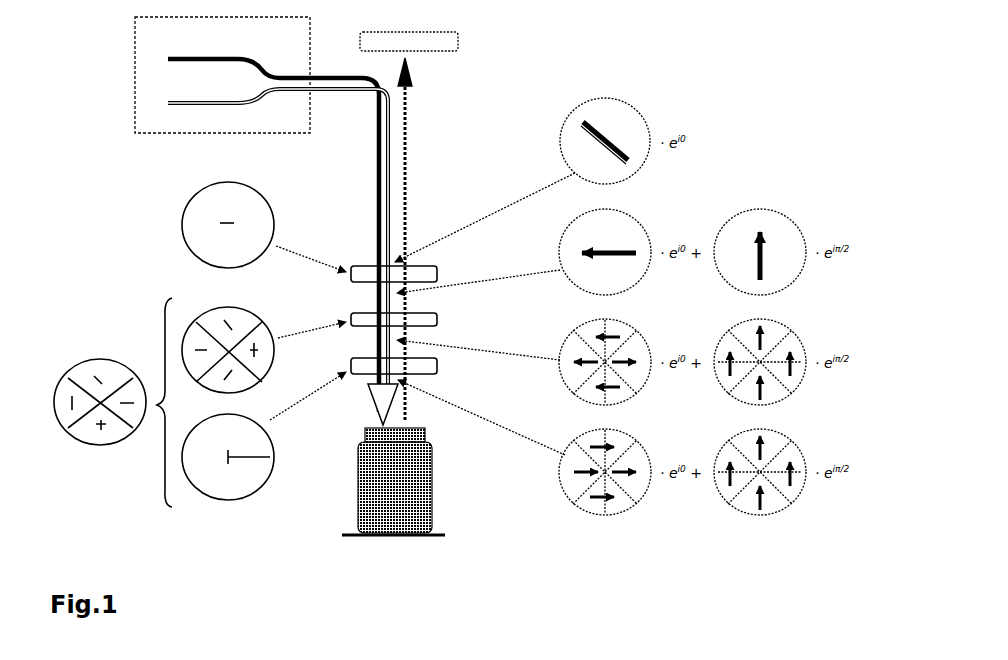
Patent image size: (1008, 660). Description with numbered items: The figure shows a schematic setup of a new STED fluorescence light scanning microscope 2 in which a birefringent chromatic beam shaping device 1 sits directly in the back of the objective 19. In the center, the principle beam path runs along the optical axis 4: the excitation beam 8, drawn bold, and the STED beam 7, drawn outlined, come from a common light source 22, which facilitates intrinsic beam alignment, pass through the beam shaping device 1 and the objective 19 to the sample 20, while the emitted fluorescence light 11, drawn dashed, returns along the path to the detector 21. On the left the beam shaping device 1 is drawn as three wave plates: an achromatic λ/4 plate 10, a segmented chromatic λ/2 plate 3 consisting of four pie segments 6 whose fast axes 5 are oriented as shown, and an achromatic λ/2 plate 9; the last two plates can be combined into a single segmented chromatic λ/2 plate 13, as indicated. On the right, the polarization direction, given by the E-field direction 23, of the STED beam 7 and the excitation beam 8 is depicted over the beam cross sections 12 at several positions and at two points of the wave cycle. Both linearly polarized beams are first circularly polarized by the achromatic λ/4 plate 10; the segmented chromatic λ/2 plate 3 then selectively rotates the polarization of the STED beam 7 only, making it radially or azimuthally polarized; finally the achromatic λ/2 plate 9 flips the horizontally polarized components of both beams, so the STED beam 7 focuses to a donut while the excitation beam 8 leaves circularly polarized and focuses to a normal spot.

The beam shaping device 1 is at (350, 252).
The fluorescence light scanning microscope 2 is at (450, 142).
The segmented chromatic λ/2 plate 3 is at (250, 316).
The optical axis 4 is at (225, 345).
The fast axis 5 is at (226, 220).
The pie segment 6 is at (244, 386).
The STED beam 7 is at (212, 101).
The excitation beam 8 is at (170, 63).
The achromatic λ/2 plate 9 is at (211, 497).
The achromatic λ/4 plate 10 is at (184, 210).
The fluorescence light 11 is at (408, 178).
The beam cross section 12 is at (641, 112).
The segmented chromatic λ/2 plate 13 is at (88, 372).
The objective 19 is at (430, 480).
The sample 20 is at (430, 540).
The detector 21 is at (460, 40).
The light source 22 is at (135, 50).
The E-field direction 23 is at (618, 246).